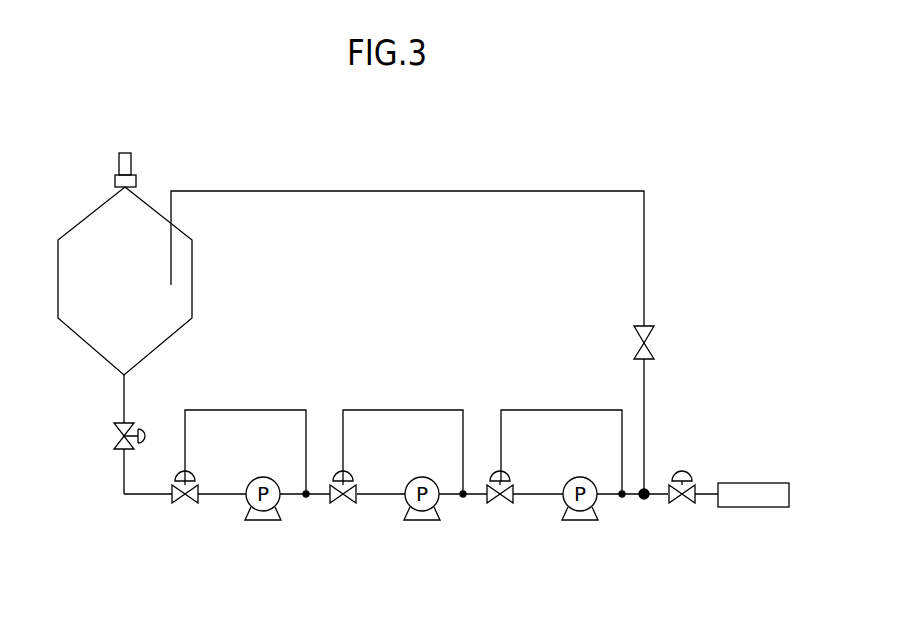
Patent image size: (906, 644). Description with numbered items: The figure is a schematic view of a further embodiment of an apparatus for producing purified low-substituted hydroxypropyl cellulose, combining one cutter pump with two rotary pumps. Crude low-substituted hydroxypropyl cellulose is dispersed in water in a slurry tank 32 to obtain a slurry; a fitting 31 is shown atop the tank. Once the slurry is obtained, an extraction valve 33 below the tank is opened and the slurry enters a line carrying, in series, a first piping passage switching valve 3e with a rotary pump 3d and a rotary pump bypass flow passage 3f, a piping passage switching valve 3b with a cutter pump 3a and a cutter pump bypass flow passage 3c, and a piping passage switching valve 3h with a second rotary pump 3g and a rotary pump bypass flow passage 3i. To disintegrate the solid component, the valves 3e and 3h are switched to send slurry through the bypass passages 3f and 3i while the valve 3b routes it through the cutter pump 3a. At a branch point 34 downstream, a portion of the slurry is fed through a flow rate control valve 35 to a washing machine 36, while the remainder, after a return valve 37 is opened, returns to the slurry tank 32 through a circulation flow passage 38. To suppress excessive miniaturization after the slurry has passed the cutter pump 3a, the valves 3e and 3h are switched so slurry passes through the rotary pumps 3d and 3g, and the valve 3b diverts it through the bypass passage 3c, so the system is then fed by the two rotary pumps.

The level sensor 31 is at (118, 163).
The slurry tank 32 is at (83, 342).
The extraction valve 33 is at (117, 432).
The branch point 34 is at (640, 500).
The flow rate control valve 35 is at (683, 505).
The washing machine 36 is at (745, 483).
The return valve 37 is at (653, 350).
The circulation flow passage 38 is at (644, 238).
The cutter pump 3a is at (425, 520).
The piping passage switching valve 3b is at (343, 505).
The cutter pump bypass flow passage 3c is at (410, 410).
The rotary pump 3d is at (260, 520).
The piping passage switching valve 3e is at (186, 505).
The rotary pump bypass flow passage 3f is at (258, 410).
The rotary pump 3g is at (580, 520).
The piping passage switching valve 3h is at (507, 505).
The rotary pump bypass flow passage 3i is at (558, 411).